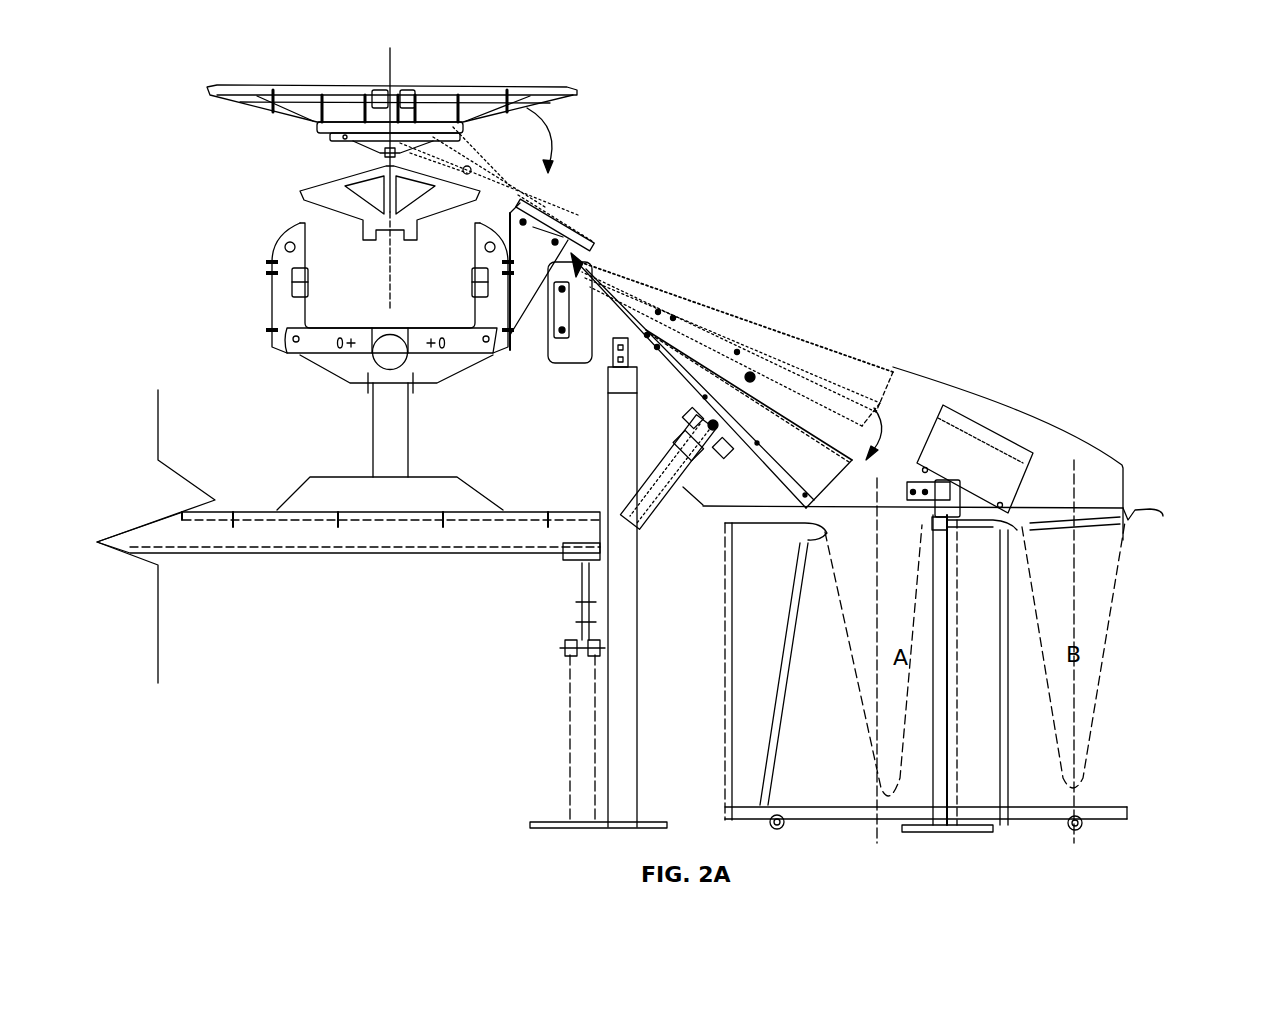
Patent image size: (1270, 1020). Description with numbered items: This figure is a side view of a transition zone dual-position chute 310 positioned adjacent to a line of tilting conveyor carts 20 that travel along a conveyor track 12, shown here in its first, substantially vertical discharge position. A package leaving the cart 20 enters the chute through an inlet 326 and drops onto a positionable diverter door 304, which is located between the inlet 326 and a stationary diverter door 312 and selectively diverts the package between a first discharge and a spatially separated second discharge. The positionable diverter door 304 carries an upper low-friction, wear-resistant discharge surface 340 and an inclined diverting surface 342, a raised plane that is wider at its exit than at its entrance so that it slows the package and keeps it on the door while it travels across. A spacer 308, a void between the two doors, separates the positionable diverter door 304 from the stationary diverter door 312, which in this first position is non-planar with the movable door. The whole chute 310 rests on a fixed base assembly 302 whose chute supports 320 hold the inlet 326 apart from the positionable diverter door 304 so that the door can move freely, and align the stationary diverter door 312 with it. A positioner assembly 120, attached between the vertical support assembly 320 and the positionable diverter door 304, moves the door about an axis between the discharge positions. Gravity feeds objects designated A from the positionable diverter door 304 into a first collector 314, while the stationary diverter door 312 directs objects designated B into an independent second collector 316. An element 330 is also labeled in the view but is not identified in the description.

The conveyor cart 20 is at (224, 84).
The conveyor track 12 is at (383, 430).
The positioner assembly 120 is at (650, 463).
The fixed base assembly 302 is at (637, 600).
The chute support 320 is at (622, 788).
The pivot bracket 330 is at (592, 330).
The inlet 326 is at (583, 240).
The positionable diverter door 304 is at (625, 287).
The discharge surface 340 is at (703, 318).
The inclined diverting surface 342 is at (850, 380).
The spacer 308 is at (937, 395).
The dual-position chute 310 is at (878, 218).
The stationary diverter door 312 is at (1005, 467).
The first collector 314 is at (900, 778).
The second collector 316 is at (1067, 757).